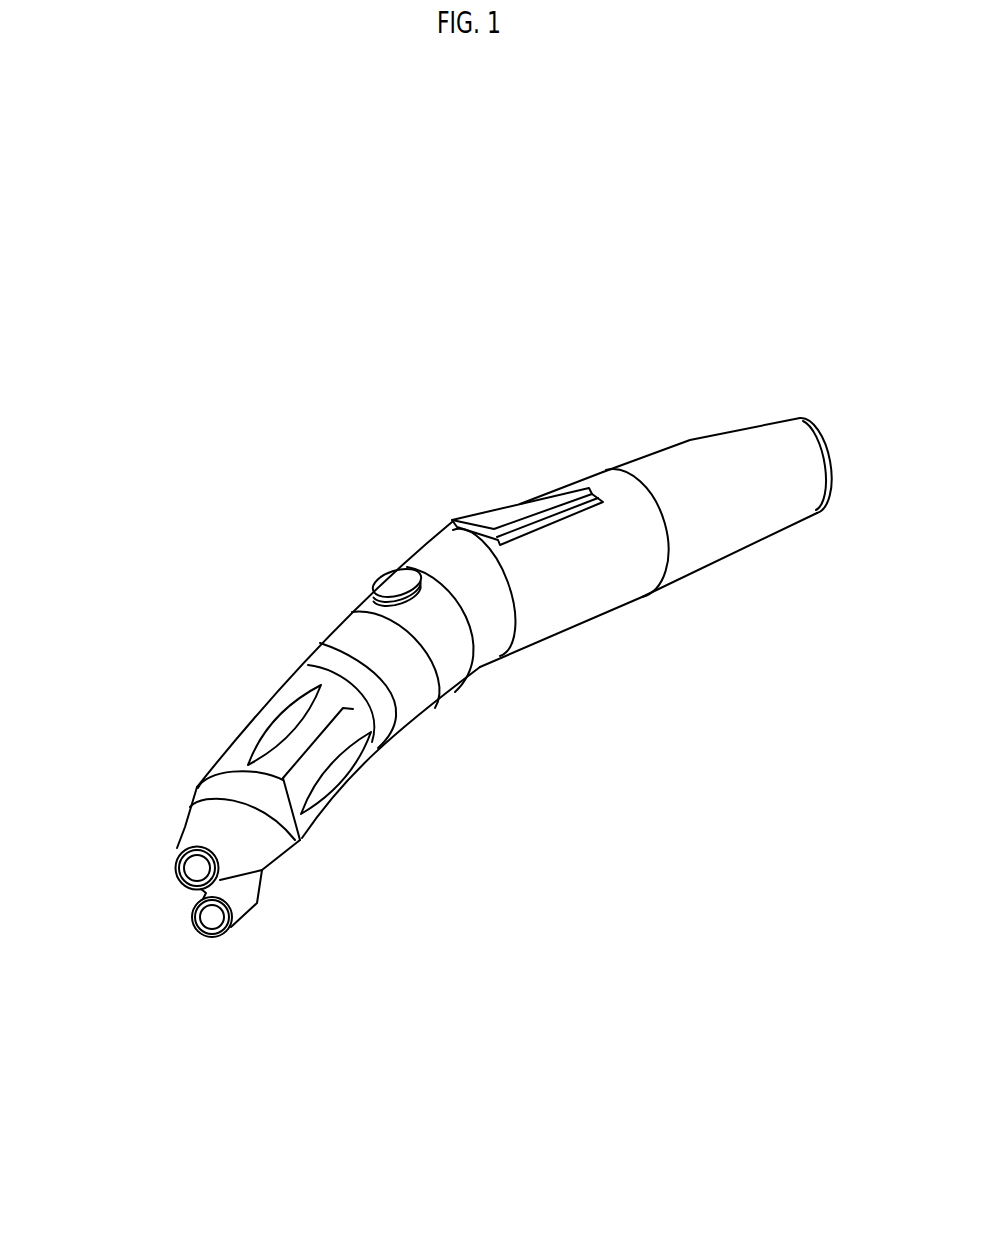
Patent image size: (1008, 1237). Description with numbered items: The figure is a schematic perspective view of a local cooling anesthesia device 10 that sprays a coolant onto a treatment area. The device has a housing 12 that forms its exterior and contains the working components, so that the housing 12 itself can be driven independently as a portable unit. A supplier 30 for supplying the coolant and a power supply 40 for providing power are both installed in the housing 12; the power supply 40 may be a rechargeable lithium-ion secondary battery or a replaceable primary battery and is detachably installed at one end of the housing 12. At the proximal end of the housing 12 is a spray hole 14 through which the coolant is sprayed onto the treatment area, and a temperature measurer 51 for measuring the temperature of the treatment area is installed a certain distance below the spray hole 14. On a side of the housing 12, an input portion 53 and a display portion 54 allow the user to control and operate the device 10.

The local cooling anesthesia device 10 is at (459, 233).
The housing 12 is at (318, 638).
The spray hole 14 is at (182, 836).
The supplier 30 is at (567, 628).
The power supply 40 is at (692, 582).
The temperature measurer 51 is at (212, 938).
The input portion 53 is at (387, 583).
The display portion 54 is at (523, 500).